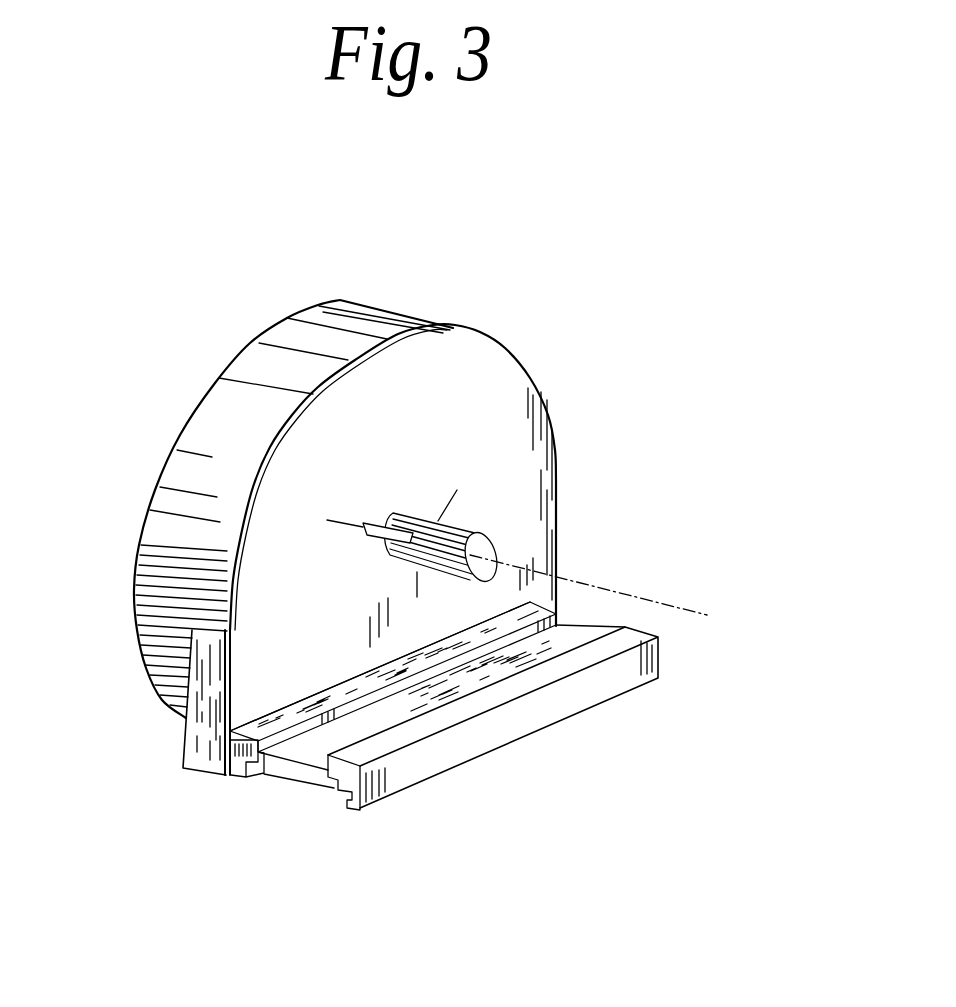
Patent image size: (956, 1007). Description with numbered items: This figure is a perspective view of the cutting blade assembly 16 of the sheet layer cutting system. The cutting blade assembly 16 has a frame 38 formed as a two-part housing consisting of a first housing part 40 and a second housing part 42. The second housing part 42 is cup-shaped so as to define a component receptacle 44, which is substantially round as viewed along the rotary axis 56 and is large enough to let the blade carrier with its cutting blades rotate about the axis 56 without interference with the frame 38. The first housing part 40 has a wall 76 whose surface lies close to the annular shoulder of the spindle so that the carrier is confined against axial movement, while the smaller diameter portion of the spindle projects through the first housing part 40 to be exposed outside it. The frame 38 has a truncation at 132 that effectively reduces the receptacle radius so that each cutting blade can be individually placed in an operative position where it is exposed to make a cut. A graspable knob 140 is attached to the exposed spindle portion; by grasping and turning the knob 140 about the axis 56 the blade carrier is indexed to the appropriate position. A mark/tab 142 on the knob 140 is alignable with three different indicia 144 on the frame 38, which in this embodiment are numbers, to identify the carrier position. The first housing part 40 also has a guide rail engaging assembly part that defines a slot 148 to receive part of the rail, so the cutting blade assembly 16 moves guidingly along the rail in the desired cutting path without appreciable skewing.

The cutting blade assembly 16 is at (653, 537).
The frame 38 is at (395, 310).
The first housing part 40 is at (517, 513).
The second housing part 42 is at (153, 477).
The component receptacle 44 is at (268, 385).
The rotary axis 56 is at (673, 607).
The wall 76 is at (440, 390).
The truncation 132 is at (210, 787).
The graspable knob 140 is at (470, 535).
The mark/tab 142 is at (380, 525).
The indicia 144 is at (473, 452).
The slot 148 is at (302, 770).